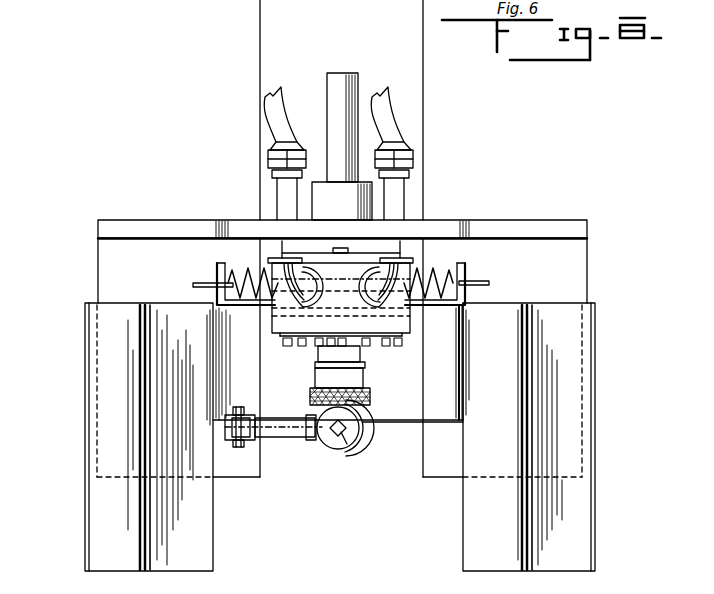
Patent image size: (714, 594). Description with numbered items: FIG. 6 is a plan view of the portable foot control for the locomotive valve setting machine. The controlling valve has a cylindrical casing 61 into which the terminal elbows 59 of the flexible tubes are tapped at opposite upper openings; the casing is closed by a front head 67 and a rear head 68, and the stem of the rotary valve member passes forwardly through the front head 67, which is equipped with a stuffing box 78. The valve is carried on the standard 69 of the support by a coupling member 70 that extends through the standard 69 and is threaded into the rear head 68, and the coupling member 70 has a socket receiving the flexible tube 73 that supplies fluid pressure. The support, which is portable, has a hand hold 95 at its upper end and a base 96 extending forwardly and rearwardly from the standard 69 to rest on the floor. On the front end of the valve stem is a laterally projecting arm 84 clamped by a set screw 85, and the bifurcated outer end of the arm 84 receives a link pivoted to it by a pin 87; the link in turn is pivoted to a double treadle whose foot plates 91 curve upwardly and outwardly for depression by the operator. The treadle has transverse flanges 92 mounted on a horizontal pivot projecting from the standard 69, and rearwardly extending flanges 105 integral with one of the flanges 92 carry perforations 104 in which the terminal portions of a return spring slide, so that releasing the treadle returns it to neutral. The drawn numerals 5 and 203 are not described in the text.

The pipe 5 is at (285, 200).
The terminal elbows 59 is at (375, 309).
The cylindrical casing 61 is at (303, 334).
The front head 67 is at (403, 341).
The rear head 68 is at (388, 250).
The standard 69 is at (543, 223).
The coupling member 70 is at (372, 193).
The flexible tube 73 is at (360, 78).
The stuffing box 78 is at (363, 377).
The arm 84 is at (310, 443).
The set screw 85 is at (347, 443).
The pin 87 is at (237, 447).
The foot plates 91 is at (123, 363).
The transversely disposed flanges 92 is at (428, 420).
The hand hold 95 is at (231, 220).
The base 96 is at (415, 102).
The perforations 104 is at (225, 280).
The flanges 105 is at (216, 267).
The rod 203 is at (195, 287).